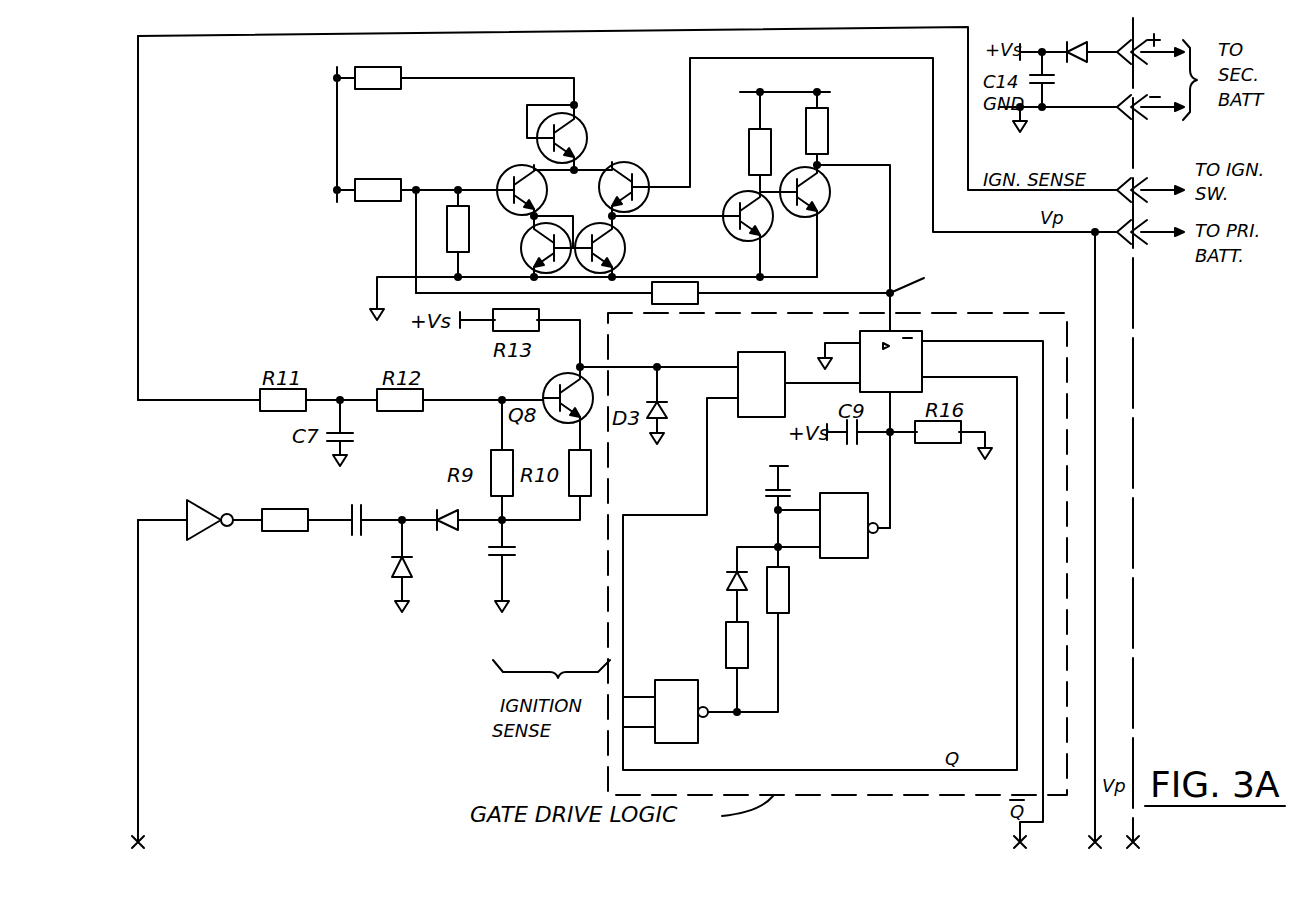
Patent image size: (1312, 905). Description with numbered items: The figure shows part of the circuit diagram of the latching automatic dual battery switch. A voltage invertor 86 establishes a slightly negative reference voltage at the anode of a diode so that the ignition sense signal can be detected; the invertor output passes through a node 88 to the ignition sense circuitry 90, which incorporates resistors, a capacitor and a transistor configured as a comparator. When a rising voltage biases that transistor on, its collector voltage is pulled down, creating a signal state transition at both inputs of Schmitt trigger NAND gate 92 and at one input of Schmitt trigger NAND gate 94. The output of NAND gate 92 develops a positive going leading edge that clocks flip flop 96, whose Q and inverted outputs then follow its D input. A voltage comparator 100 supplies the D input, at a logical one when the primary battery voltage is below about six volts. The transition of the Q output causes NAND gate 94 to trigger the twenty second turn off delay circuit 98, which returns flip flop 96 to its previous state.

The voltage invertor 86 is at (170, 621).
The node 88 is at (508, 520).
The ignition sense circuitry 90 is at (207, 400).
The Schmitt trigger NAND gate 92 is at (752, 352).
The Schmitt trigger NAND gate 94 is at (700, 742).
The flip flop 96 is at (924, 331).
The turn off delay circuit 98 is at (898, 462).
The voltage comparator 100 is at (297, 73).